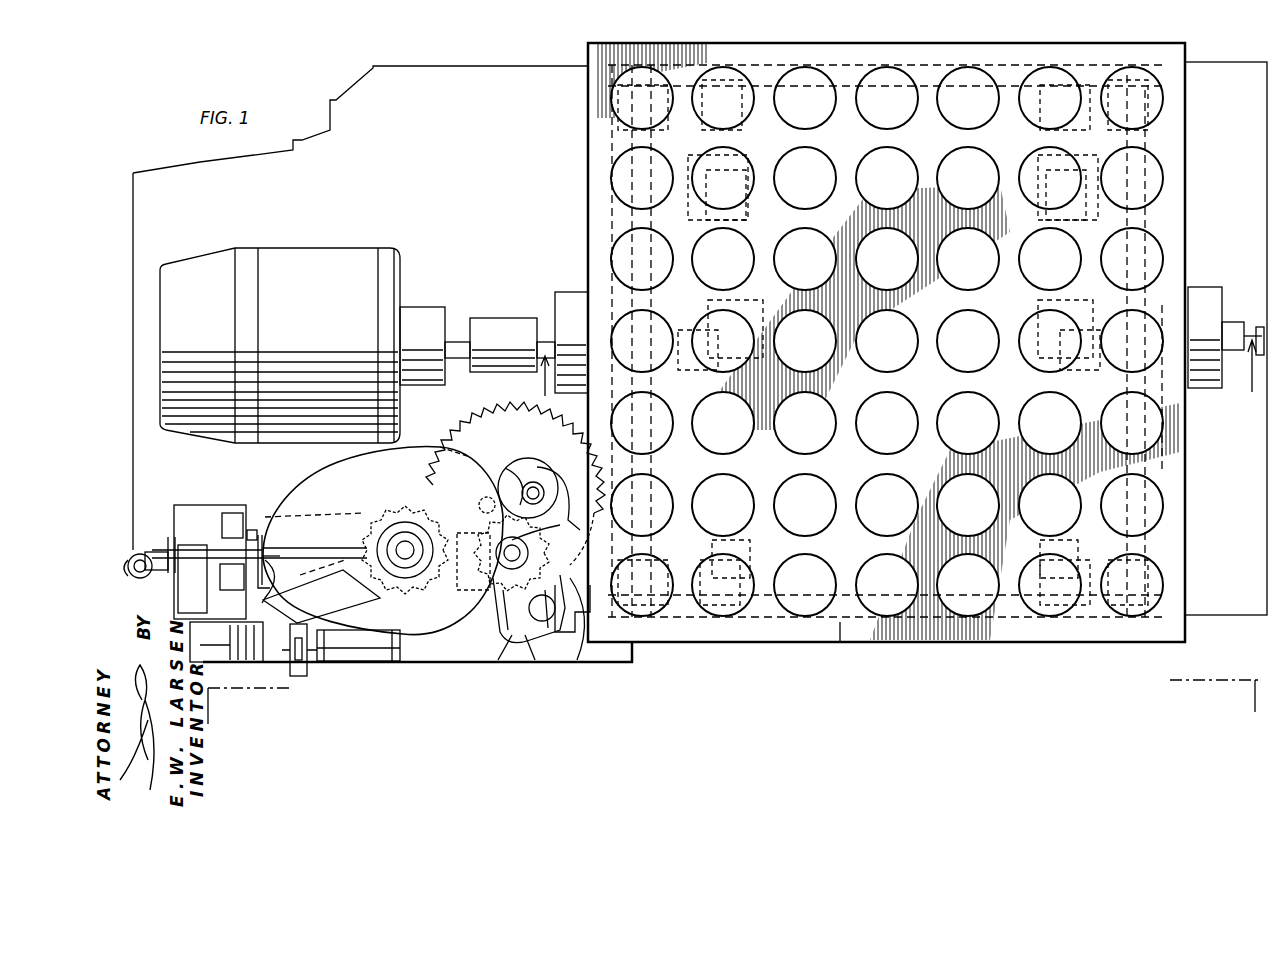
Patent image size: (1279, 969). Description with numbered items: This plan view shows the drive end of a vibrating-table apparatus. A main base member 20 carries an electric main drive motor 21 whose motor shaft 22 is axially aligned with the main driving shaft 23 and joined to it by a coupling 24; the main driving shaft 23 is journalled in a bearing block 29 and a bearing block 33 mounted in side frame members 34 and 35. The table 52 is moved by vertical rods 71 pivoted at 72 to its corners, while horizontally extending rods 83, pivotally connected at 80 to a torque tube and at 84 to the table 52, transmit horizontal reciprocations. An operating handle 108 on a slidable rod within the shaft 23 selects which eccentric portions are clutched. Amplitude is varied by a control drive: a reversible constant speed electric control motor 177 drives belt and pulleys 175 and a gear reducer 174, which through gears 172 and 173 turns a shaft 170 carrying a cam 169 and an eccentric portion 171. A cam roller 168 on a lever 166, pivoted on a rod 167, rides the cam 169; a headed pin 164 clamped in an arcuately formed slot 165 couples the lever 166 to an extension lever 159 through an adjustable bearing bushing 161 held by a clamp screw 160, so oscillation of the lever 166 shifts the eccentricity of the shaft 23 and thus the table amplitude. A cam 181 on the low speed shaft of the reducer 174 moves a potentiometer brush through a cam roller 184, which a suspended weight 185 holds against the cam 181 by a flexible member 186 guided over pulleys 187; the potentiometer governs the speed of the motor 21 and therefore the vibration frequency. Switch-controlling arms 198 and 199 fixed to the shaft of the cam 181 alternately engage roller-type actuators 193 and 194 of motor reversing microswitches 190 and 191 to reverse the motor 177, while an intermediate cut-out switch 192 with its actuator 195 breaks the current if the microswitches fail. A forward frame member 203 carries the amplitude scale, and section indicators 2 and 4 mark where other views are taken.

The section line 2 is at (735, 704).
The direction arrow 4 is at (888, 368).
The main base member 20 is at (190, 176).
The electric main drive motor 21 is at (295, 258).
The motor shaft 22 is at (455, 340).
The main driving shaft 23 is at (545, 340).
The coupling 24 is at (500, 335).
The bearing block 29 is at (570, 300).
The bearing block 33 is at (1200, 290).
The side frame member 34 is at (612, 210).
The side frame member 35 is at (1150, 232).
The table 52 is at (600, 120).
The rods 71 is at (720, 137).
The pivot connection 72 is at (740, 565).
The pivot connection 80 is at (738, 170).
The horizontally extending rods 83 is at (710, 298).
The pivot connection 84 is at (710, 360).
The operating handle 108 is at (1258, 325).
The extension lever 159 is at (576, 661).
The clamp screw 160 is at (508, 609).
The adjustable bearing bushing 161 is at (535, 548).
The headed pin 164 is at (549, 525).
The arcuately formed slot 165 is at (498, 660).
The lever 166 is at (535, 662).
The rod 167 is at (545, 622).
The cam roller 168 is at (525, 462).
The cam 169 is at (558, 477).
The shaft 170 is at (447, 448).
The eccentric portion 171 is at (540, 486).
The gear 172 is at (452, 440).
The gear 173 is at (392, 520).
The gear reducer 174 is at (395, 663).
The belt and pulleys 175 is at (300, 676).
The reversible constant speed electric control motor 177 is at (232, 662).
The cam 181 is at (345, 462).
The cam roller 184 is at (268, 540).
The suspended weight 185 is at (138, 554).
The flexible member 186 is at (128, 572).
The pulleys 187 is at (158, 575).
The motor reversing microswitch 190 is at (228, 512).
The motor reversing microswitch 191 is at (230, 582).
The motor cut-out switch 192 is at (192, 545).
The roller-type actuator 193 is at (252, 528).
The roller-type actuator 194 is at (288, 582).
The roller-type actuator 195 is at (283, 560).
The adjustable switch-controlling arm 198 is at (338, 530).
The adjustable switch-controlling arm 199 is at (321, 594).
The forward frame member 203 is at (843, 640).